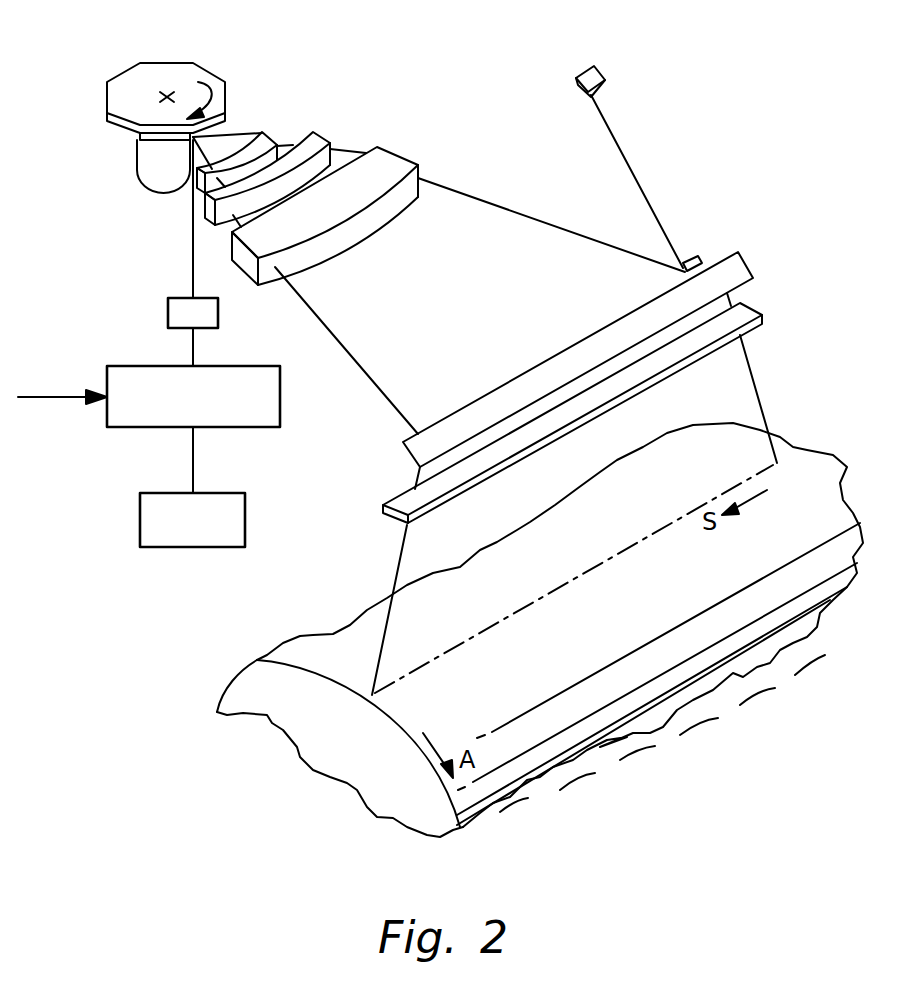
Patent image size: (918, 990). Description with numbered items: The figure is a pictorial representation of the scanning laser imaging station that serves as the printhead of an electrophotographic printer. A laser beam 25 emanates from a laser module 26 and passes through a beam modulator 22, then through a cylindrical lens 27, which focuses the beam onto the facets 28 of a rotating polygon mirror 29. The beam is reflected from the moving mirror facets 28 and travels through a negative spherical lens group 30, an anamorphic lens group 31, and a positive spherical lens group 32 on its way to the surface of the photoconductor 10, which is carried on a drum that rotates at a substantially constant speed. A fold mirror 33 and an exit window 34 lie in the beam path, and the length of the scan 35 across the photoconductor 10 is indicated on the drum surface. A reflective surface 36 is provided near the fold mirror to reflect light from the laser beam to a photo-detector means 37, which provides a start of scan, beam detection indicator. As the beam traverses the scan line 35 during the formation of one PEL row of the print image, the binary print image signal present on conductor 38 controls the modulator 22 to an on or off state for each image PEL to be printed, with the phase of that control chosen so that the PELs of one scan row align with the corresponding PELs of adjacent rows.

The photoconductor 10 is at (720, 673).
The beam modulator 22 is at (282, 392).
The laser beam 25 is at (194, 450).
The laser module 26 is at (245, 513).
The cylindrical lens 27 is at (218, 308).
The facets 28 is at (222, 120).
The rotating polygon mirror 29 is at (167, 80).
The negative spherical lens group 30 is at (263, 132).
The anamorphic lens group 31 is at (314, 131).
The positive spherical lens group 32 is at (390, 162).
The fold mirror 33 is at (720, 250).
The exit window 34 is at (742, 307).
The scan line 35 is at (578, 575).
The reflective surface 36 is at (690, 259).
The photo-detector means 37 is at (600, 73).
The conductor 38 is at (67, 395).